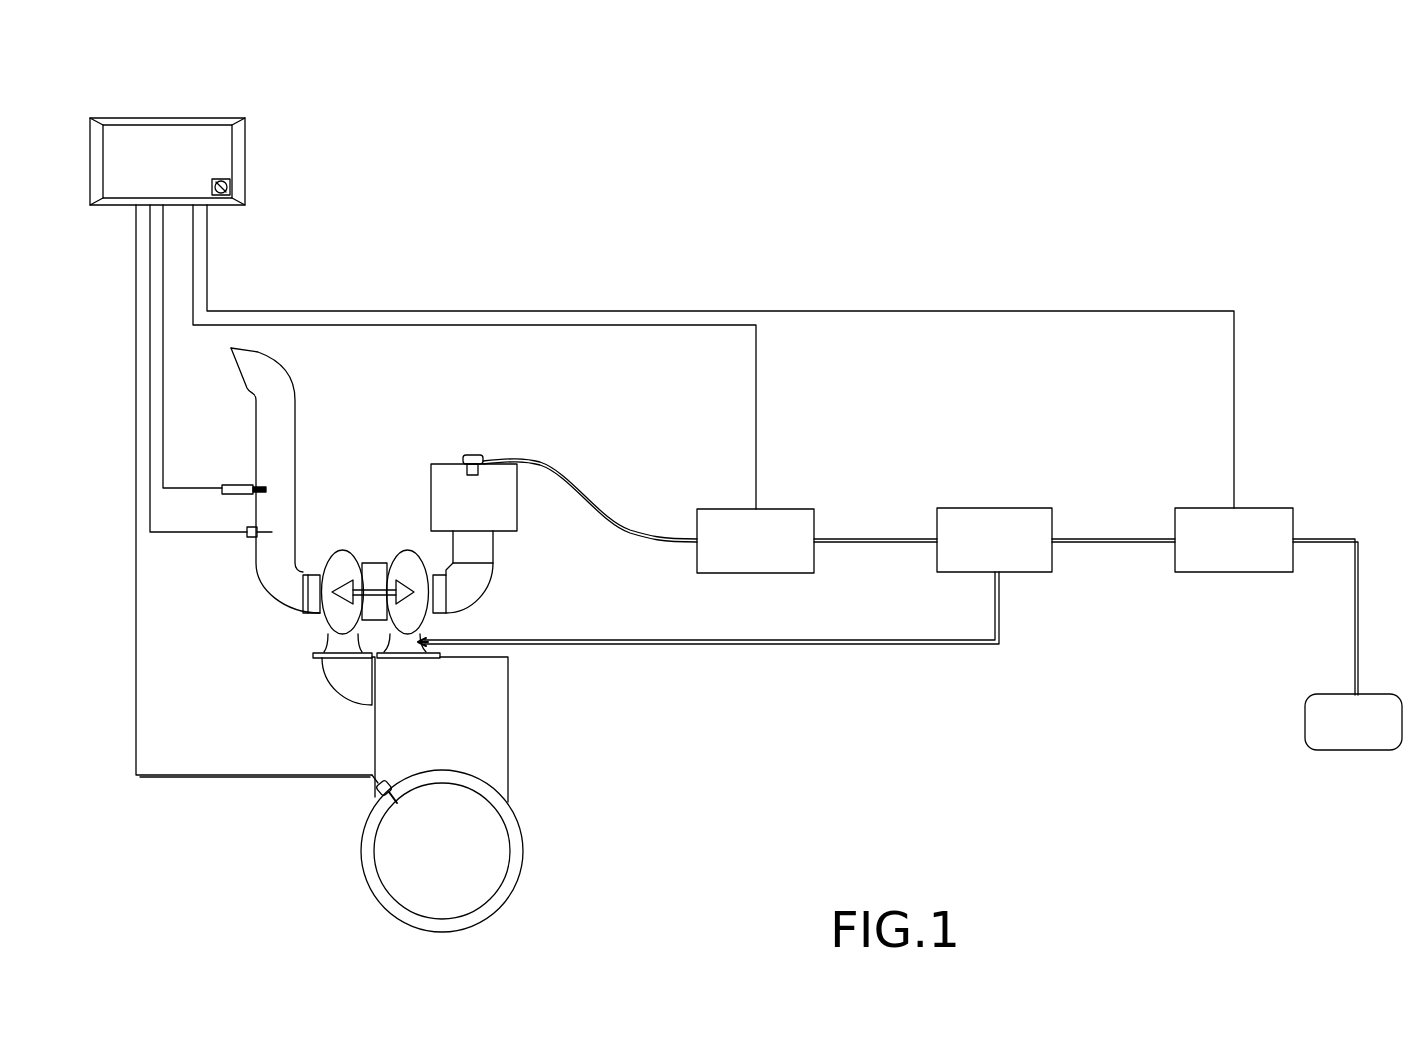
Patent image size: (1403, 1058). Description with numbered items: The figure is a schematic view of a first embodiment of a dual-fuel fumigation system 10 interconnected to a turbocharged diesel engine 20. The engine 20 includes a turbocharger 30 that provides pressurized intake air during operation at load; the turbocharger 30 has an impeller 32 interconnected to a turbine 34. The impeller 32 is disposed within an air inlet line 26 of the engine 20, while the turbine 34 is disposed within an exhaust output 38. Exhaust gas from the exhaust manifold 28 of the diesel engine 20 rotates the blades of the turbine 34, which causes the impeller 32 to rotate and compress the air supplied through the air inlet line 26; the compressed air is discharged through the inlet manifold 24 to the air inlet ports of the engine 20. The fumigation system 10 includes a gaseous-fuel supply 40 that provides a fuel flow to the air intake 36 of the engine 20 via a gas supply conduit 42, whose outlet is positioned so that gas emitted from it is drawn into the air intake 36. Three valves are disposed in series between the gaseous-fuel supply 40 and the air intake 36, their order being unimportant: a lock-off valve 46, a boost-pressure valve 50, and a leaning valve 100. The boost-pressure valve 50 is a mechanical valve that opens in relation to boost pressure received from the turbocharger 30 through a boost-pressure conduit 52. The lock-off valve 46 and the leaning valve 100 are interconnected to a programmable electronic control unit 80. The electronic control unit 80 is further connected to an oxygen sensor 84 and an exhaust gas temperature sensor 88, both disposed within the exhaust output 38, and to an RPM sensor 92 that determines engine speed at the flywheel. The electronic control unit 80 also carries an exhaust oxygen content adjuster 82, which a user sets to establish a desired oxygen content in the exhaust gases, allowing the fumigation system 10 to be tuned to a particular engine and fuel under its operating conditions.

The dual-fuel fumigation system 10 is at (728, 280).
The turbocharged diesel engine 20 is at (508, 750).
The inlet manifold 24 is at (416, 655).
The air inlet line 26 is at (484, 575).
The exhaust manifold 28 is at (343, 670).
The turbocharger 30 is at (365, 569).
The impeller 32 is at (410, 592).
The turbine 34 is at (344, 596).
The air intake 36 is at (442, 462).
The exhaust output 38 is at (270, 582).
The gaseous-fuel supply 40 is at (1305, 724).
The gas supply conduit 42 is at (588, 492).
The lock-off valve 46 is at (1235, 573).
The boost-pressure valve 50 is at (1024, 573).
The boost-pressure conduit 52 is at (808, 645).
The programmable electronic control unit 80 is at (156, 114).
The exhaust oxygen content adjuster 82 is at (232, 188).
The oxygen sensor 84 is at (240, 487).
The exhaust gas temperature sensor 88 is at (244, 538).
The RPM sensor 92 is at (378, 789).
The leaning valve 100 is at (792, 509).